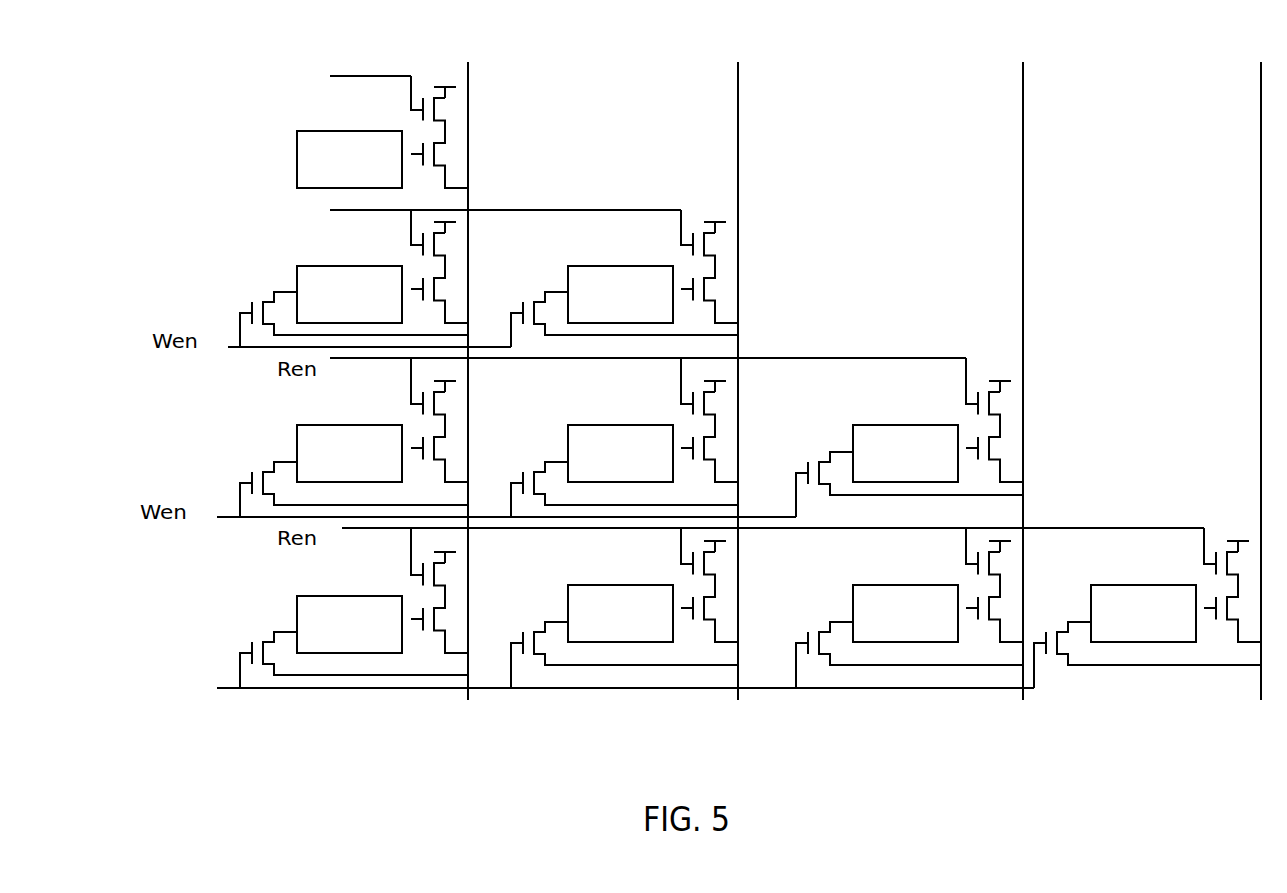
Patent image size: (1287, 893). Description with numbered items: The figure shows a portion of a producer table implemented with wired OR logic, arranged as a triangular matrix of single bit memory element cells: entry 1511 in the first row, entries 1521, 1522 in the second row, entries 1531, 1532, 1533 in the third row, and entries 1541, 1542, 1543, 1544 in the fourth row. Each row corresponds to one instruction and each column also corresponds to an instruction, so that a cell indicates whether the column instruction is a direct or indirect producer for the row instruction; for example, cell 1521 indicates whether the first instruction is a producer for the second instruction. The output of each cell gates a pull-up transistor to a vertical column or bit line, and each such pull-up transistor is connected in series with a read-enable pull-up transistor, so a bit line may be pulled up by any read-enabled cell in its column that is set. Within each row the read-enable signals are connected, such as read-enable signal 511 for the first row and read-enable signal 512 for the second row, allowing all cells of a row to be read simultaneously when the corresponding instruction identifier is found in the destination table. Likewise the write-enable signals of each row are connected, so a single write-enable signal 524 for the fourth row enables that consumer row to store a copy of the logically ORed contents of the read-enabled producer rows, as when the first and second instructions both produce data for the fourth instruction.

The read-enable signal 511 is at (327, 73).
The read-enable signal 512 is at (462, 209).
The write-enable signal 524 is at (587, 676).
The producer table entry 1511 is at (382, 132).
The producer table entry 1521 is at (354, 278).
The producer table entry 1522 is at (624, 278).
The producer table entry 1531 is at (354, 437).
The producer table entry 1532 is at (624, 437).
The producer table entry 1533 is at (909, 437).
The producer table entry 1541 is at (354, 608).
The producer table entry 1542 is at (624, 608).
The producer table entry 1543 is at (909, 608).
The producer table entry 1544 is at (1147, 608).